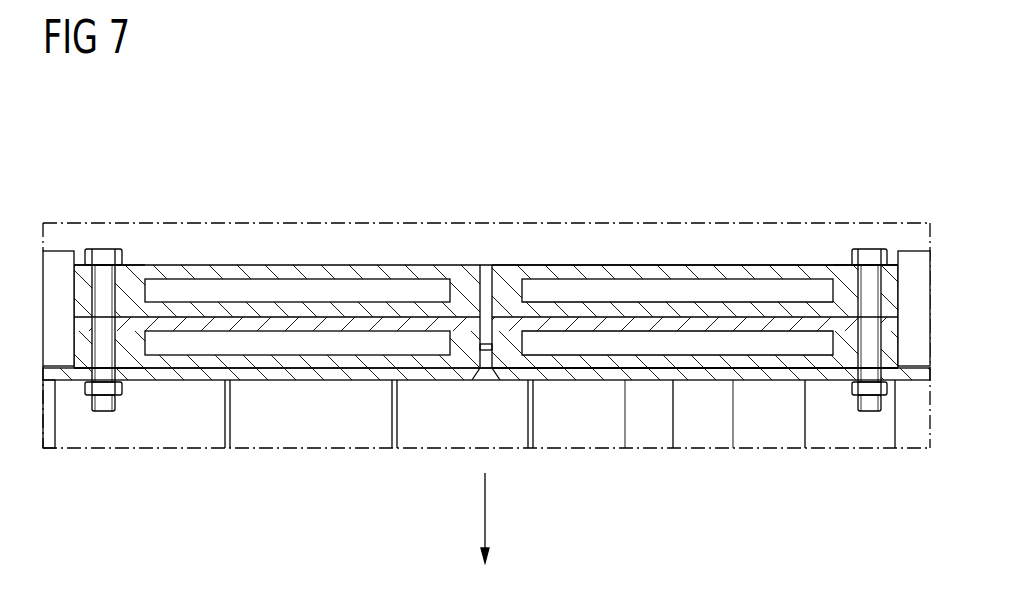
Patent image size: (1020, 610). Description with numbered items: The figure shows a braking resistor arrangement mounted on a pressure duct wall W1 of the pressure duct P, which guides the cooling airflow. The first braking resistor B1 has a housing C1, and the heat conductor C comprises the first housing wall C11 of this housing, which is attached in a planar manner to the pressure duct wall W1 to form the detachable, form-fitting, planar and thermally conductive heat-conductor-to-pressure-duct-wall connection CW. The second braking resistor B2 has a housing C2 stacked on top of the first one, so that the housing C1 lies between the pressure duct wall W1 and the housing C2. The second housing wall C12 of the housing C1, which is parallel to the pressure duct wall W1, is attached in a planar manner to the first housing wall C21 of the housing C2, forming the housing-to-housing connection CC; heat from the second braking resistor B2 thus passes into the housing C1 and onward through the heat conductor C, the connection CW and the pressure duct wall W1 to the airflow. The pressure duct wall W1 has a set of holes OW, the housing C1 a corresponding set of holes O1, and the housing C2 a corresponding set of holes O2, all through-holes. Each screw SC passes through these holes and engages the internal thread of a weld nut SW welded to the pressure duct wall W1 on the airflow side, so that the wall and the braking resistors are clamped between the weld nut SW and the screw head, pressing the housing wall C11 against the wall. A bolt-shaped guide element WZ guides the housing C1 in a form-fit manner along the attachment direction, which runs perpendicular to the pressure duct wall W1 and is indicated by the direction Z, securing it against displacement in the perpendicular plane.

The screw SC is at (105, 258).
The weld nut SW is at (108, 388).
The set of holes of the first braking resistor housing O1 is at (120, 343).
The set of holes of the second braking resistor housing O2 is at (118, 282).
The set of holes of the pressure duct wall OW is at (87, 373).
The pressure duct wall W1 is at (262, 375).
The pressure duct P is at (325, 428).
The guide element WZ is at (488, 360).
The first braking resistor B1 is at (562, 340).
The second braking resistor B2 is at (557, 290).
The heat-conductor-to-pressure-duct-wall connection CW is at (612, 368).
The heat conductor C is at (677, 435).
The first housing wall of the housing of the first braking resistor C11 is at (712, 362).
The second housing wall of the housing of the first braking resistor C12 is at (627, 320).
The first housing wall of the housing of the second braking resistor C21 is at (663, 310).
The housing-to-housing connection CC is at (722, 312).
The housing of the first braking resistor C1 is at (846, 352).
The housing of the second braking resistor C2 is at (850, 272).
The Z axis direction Z is at (485, 520).